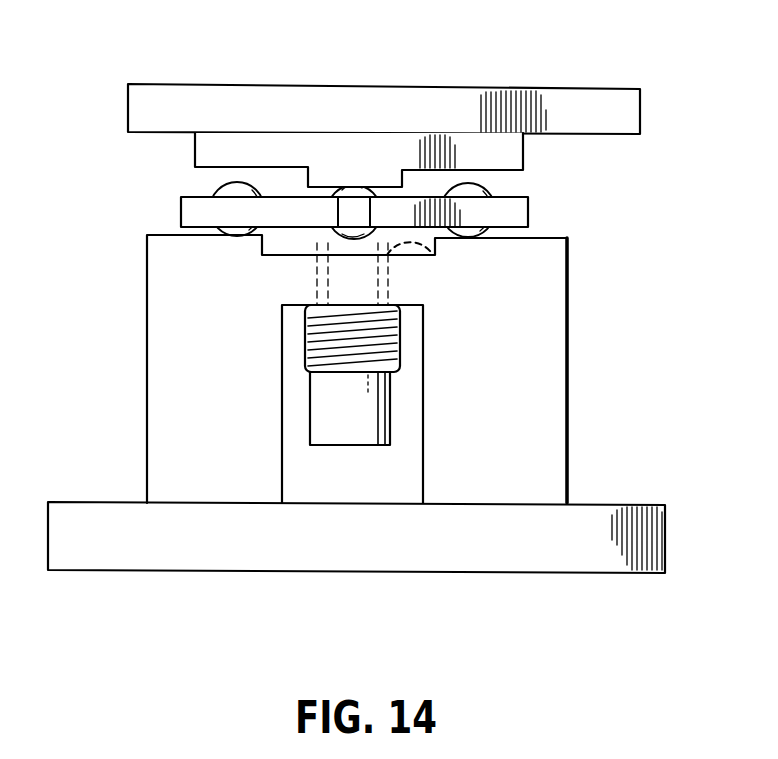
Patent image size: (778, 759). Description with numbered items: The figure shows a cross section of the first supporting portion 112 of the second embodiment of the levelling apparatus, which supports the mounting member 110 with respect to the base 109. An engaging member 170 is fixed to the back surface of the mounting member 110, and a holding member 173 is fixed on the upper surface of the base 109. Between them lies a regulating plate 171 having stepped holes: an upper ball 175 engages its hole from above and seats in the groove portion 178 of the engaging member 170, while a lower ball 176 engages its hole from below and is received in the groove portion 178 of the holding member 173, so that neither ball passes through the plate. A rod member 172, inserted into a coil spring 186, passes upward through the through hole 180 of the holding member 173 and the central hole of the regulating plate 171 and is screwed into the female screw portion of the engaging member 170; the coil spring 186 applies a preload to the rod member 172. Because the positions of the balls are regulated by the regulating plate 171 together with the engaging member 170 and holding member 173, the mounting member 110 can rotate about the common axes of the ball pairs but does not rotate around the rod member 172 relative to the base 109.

The base 109 is at (565, 560).
The mounting member 110 is at (572, 100).
The first supporting portion 112 is at (632, 339).
The engaging member 170 is at (337, 150).
The regulating plate 171 is at (528, 215).
The rod member 172 is at (390, 430).
The holding member 173 is at (548, 463).
The ball 175 is at (495, 193).
The ball 176 is at (212, 193).
The groove portion 178 is at (355, 185).
The through hole 180 is at (440, 255).
The coil spring 186 is at (305, 350).